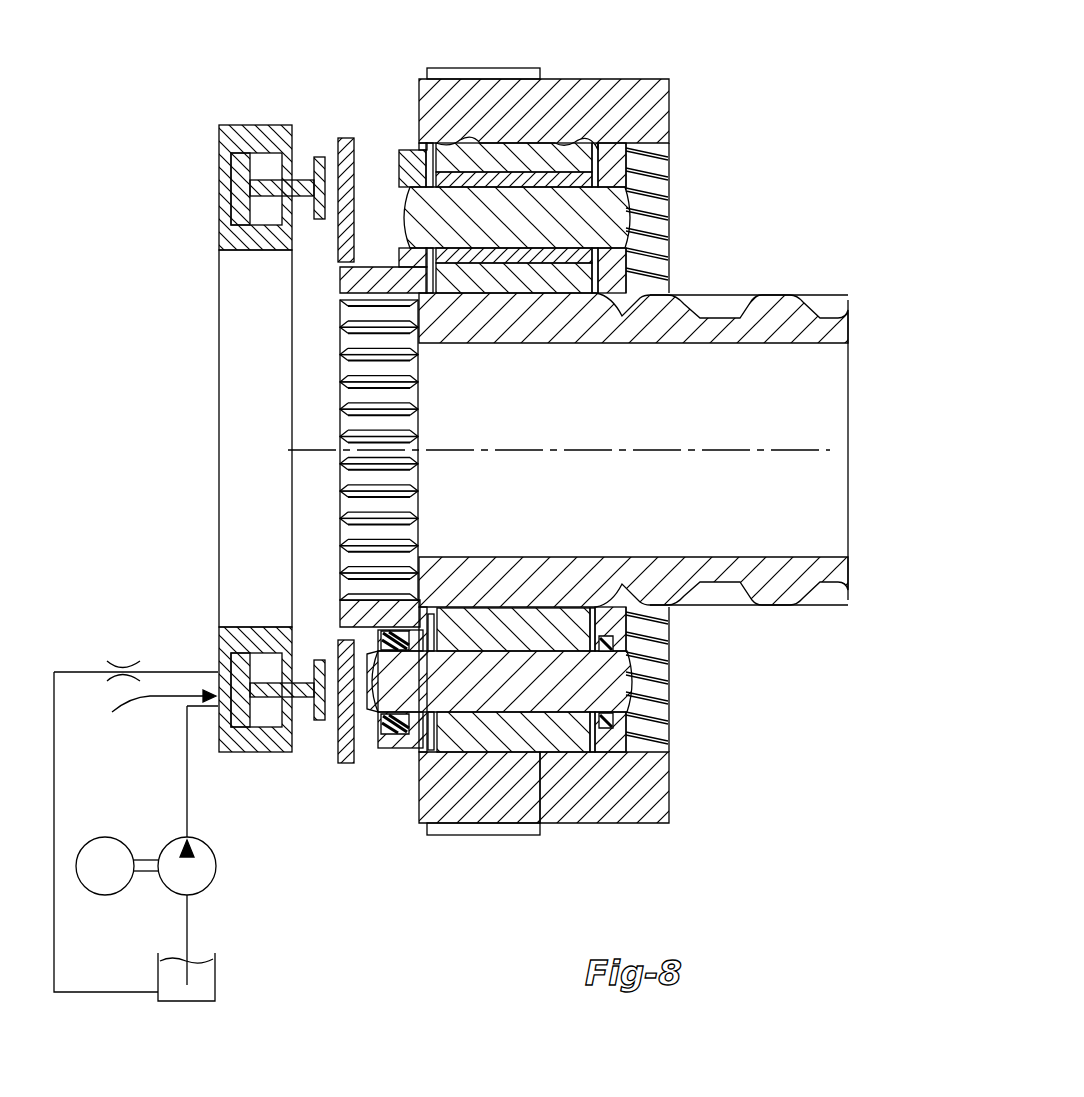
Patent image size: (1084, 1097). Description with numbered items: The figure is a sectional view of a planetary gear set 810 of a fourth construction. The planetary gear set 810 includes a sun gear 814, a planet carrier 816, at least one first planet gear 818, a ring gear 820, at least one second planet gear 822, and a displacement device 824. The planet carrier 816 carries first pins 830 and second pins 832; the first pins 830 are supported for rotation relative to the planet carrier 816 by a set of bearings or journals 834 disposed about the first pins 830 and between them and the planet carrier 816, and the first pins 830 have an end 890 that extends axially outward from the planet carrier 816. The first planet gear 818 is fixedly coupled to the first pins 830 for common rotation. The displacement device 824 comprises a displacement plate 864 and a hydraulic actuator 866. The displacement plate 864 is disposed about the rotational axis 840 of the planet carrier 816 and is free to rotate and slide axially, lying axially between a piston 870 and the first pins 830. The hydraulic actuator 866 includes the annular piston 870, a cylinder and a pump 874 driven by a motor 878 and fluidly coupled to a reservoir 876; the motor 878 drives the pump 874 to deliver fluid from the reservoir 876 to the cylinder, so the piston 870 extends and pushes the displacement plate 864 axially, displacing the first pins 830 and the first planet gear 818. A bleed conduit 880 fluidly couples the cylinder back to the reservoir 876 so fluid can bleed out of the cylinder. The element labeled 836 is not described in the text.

The planetary gear set 810 is at (679, 70).
The sun gear 814 is at (667, 325).
The planet carrier 816 is at (415, 160).
The first planet gear 818 is at (522, 765).
The ring gear 820 is at (575, 800).
The second planet gear 822 is at (578, 135).
The displacement device 824 is at (203, 850).
The first pins 830 is at (556, 680).
The second pins 832 is at (476, 215).
The bearings or journals 834 is at (385, 645).
The bearing 836 is at (538, 250).
The rotational axis 840 is at (750, 445).
The displacement plate 864 is at (345, 757).
The hydraulic actuator 866 is at (151, 763).
The piston 870 is at (270, 695).
The pump 874 is at (172, 842).
The reservoir 876 is at (172, 1003).
The motor 878 is at (118, 893).
The bleed conduit 880 is at (66, 672).
The end 890 is at (367, 712).